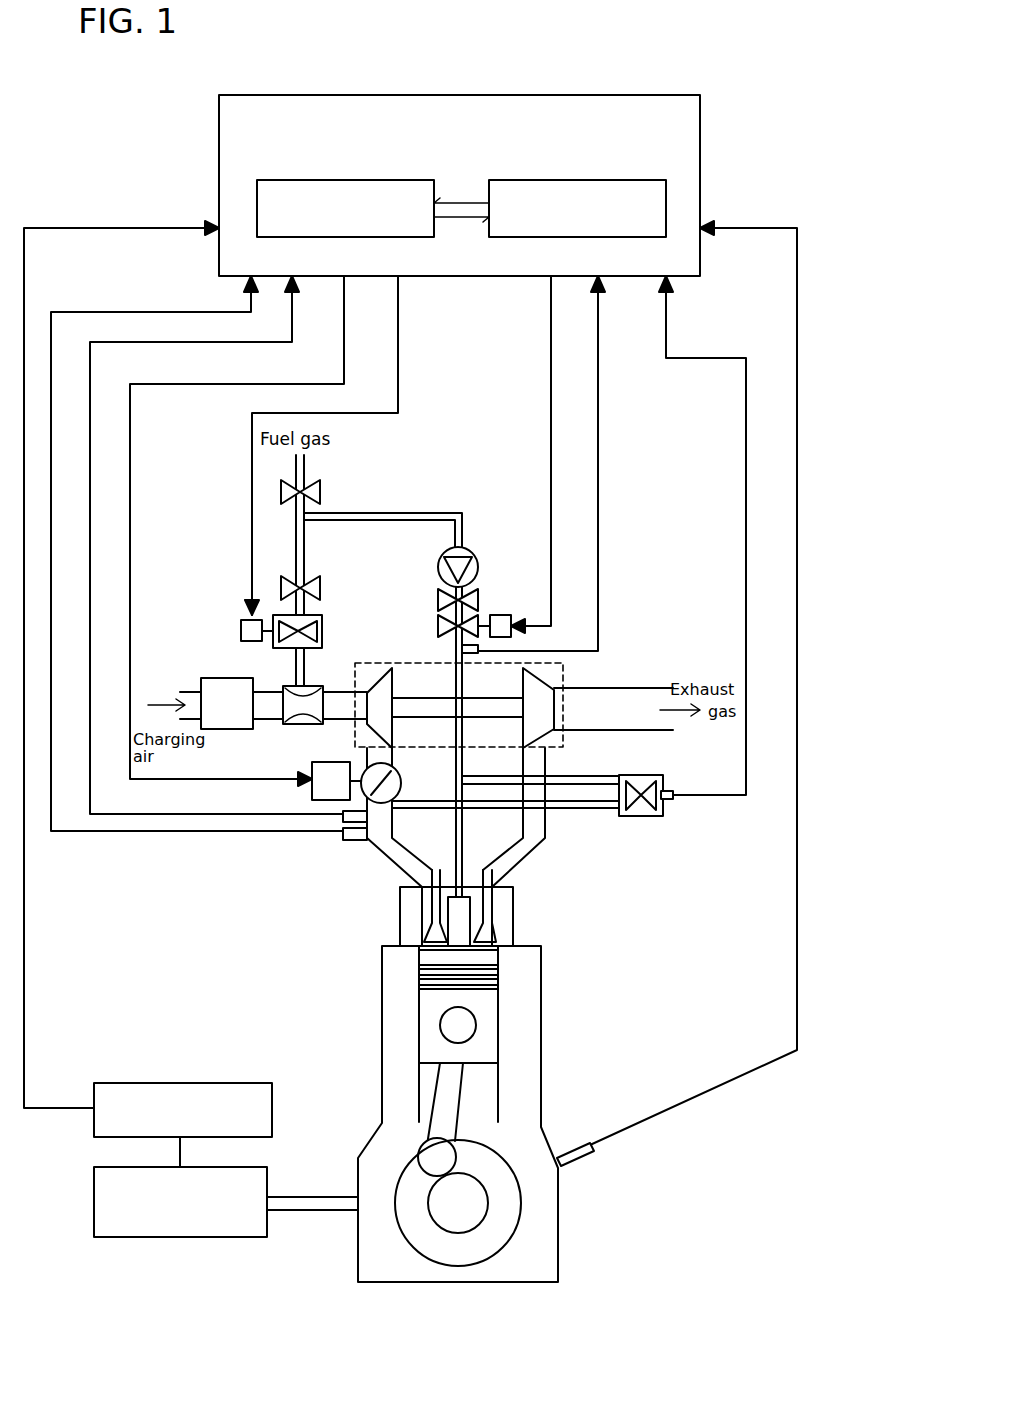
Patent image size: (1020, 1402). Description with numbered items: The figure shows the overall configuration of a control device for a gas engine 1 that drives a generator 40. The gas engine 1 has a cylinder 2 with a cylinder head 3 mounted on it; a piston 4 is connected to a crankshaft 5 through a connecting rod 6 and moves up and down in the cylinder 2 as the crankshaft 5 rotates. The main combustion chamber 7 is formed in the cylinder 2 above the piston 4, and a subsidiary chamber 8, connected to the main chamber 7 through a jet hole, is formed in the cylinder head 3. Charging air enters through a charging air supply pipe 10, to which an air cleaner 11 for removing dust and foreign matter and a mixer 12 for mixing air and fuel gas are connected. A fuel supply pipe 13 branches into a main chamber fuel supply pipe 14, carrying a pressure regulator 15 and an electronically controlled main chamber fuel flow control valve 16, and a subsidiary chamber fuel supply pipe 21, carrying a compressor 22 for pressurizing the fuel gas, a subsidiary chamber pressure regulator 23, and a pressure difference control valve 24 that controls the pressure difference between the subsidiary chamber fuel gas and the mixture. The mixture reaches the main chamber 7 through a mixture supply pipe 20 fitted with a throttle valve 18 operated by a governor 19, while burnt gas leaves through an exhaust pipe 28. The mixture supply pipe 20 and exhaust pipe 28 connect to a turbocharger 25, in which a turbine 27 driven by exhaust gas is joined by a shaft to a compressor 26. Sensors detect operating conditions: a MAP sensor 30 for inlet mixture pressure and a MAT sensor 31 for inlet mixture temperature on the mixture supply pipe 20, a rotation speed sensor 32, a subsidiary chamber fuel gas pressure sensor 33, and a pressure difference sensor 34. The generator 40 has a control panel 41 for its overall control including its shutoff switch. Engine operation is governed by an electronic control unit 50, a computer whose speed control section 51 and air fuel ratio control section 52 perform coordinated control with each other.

The gas engine 1 is at (486, 1113).
The cylinder 2 is at (465, 1114).
The cylinder head 3 is at (513, 929).
The piston 4 is at (482, 1046).
The crankshaft 5 is at (472, 1210).
The connecting rod 6 is at (420, 1123).
The main combustion chamber 7 is at (425, 958).
The subsidiary chamber 8 is at (470, 910).
The charging air supply pipe 10 is at (191, 692).
The air cleaner 11 is at (218, 678).
The mixer 12 is at (300, 724).
The fuel supply pipe 13 is at (306, 488).
The main chamber fuel supply pipe 14 is at (304, 549).
The pressure regulator 15 is at (320, 588).
The main chamber fuel flow control valve 16 is at (322, 632).
The throttle valve 18 is at (402, 783).
The governor 19 is at (311, 797).
The mixture supply pipe 20 is at (391, 861).
The subsidiary chamber fuel supply pipe 21 is at (410, 513).
The compressor 22 is at (478, 567).
The subsidiary chamber pressure regulator 23 is at (438, 600).
The pressure difference control valve 24 is at (438, 626).
The turbocharger 25 is at (570, 677).
The compressor 26 is at (393, 690).
The turbine 27 is at (522, 688).
The exhaust pipe 28 is at (526, 856).
The MAP sensor 30 is at (343, 823).
The MAT sensor 31 is at (346, 842).
The rotation speed sensor 32 is at (582, 1159).
The subsidiary chamber fuel gas pressure sensor 33 is at (480, 654).
The pressure difference sensor 34 is at (665, 791).
The generator 40 is at (130, 1237).
The control panel 41 is at (135, 1083).
The electronic control unit 50 is at (577, 95).
The speed control section 51 is at (257, 201).
The air fuel ratio control section 52 is at (666, 198).